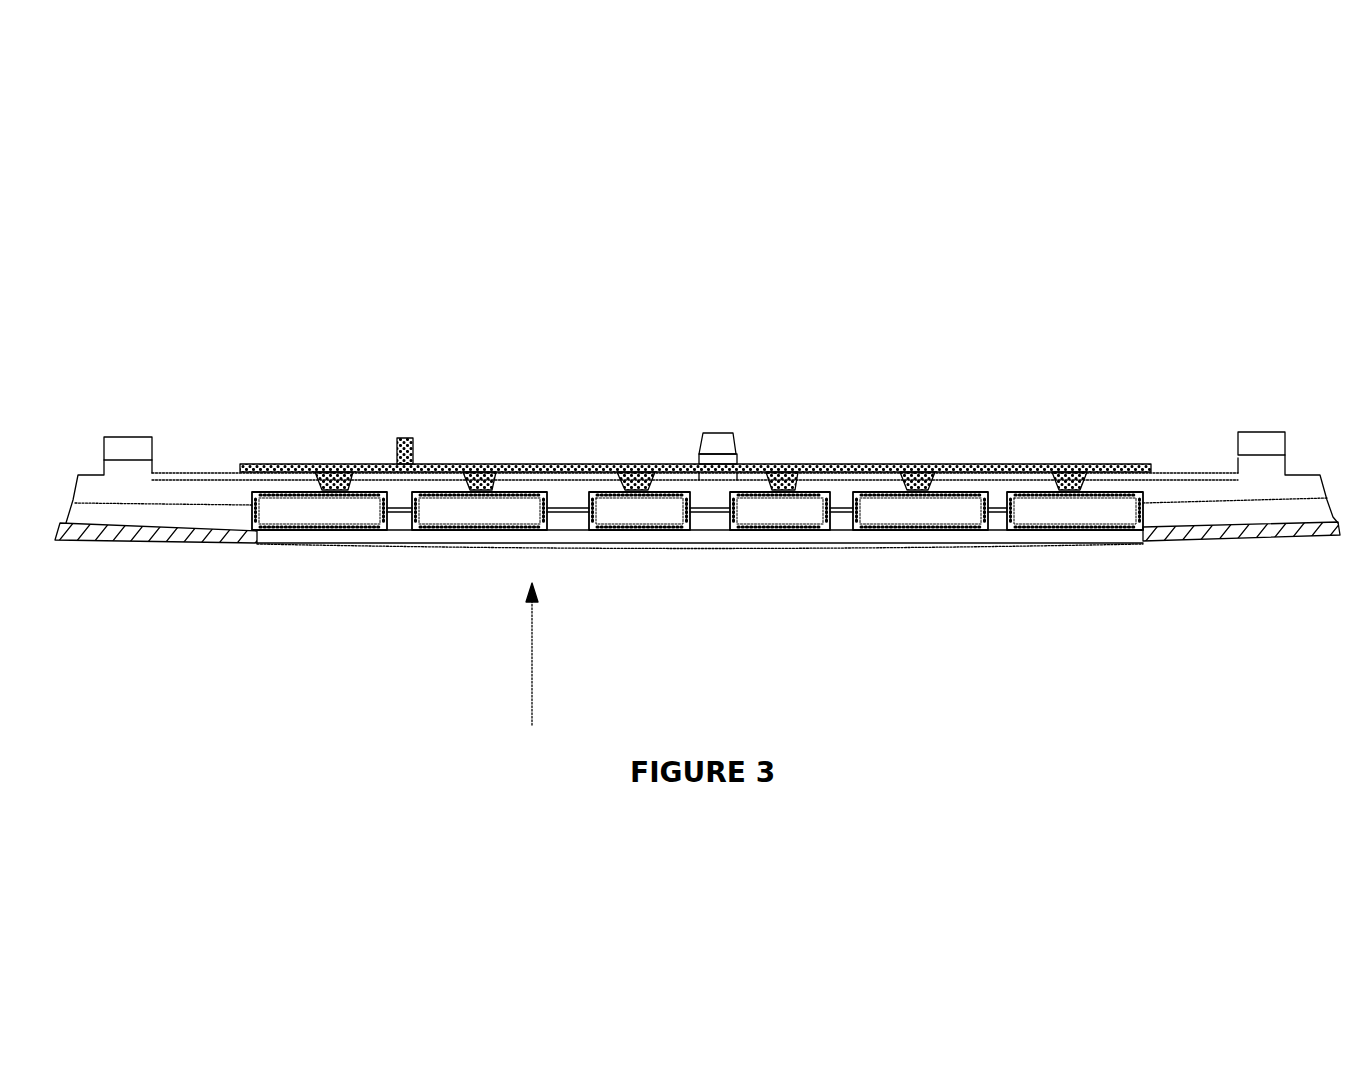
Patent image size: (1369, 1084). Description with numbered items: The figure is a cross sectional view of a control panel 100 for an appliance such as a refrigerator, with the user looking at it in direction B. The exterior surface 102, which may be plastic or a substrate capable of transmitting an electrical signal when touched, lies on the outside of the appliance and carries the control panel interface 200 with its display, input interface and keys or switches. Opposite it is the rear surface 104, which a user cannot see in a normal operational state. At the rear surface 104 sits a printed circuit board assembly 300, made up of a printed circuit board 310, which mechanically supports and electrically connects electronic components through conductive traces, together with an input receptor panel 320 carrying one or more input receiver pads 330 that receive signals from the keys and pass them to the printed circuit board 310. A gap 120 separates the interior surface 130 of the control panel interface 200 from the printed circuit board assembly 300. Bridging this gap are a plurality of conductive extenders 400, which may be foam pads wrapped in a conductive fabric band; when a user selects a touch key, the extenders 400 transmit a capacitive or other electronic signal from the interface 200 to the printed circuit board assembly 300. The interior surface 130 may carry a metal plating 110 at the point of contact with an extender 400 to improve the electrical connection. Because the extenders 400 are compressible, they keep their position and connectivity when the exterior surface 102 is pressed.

The control panel 100 is at (1024, 242).
The exterior surface 102 is at (300, 545).
The rear surface 104 is at (968, 470).
The metal plating 110 is at (876, 532).
The gap 120 is at (550, 505).
The interior surface 130 is at (270, 523).
The control panel interface 200 is at (452, 545).
The printed circuit board assembly 300 is at (405, 437).
The printed circuit board 310 is at (1108, 462).
The input receptor panel 320 is at (832, 467).
The input receiver pads 330 is at (788, 488).
The conductive extenders 400 is at (293, 505).